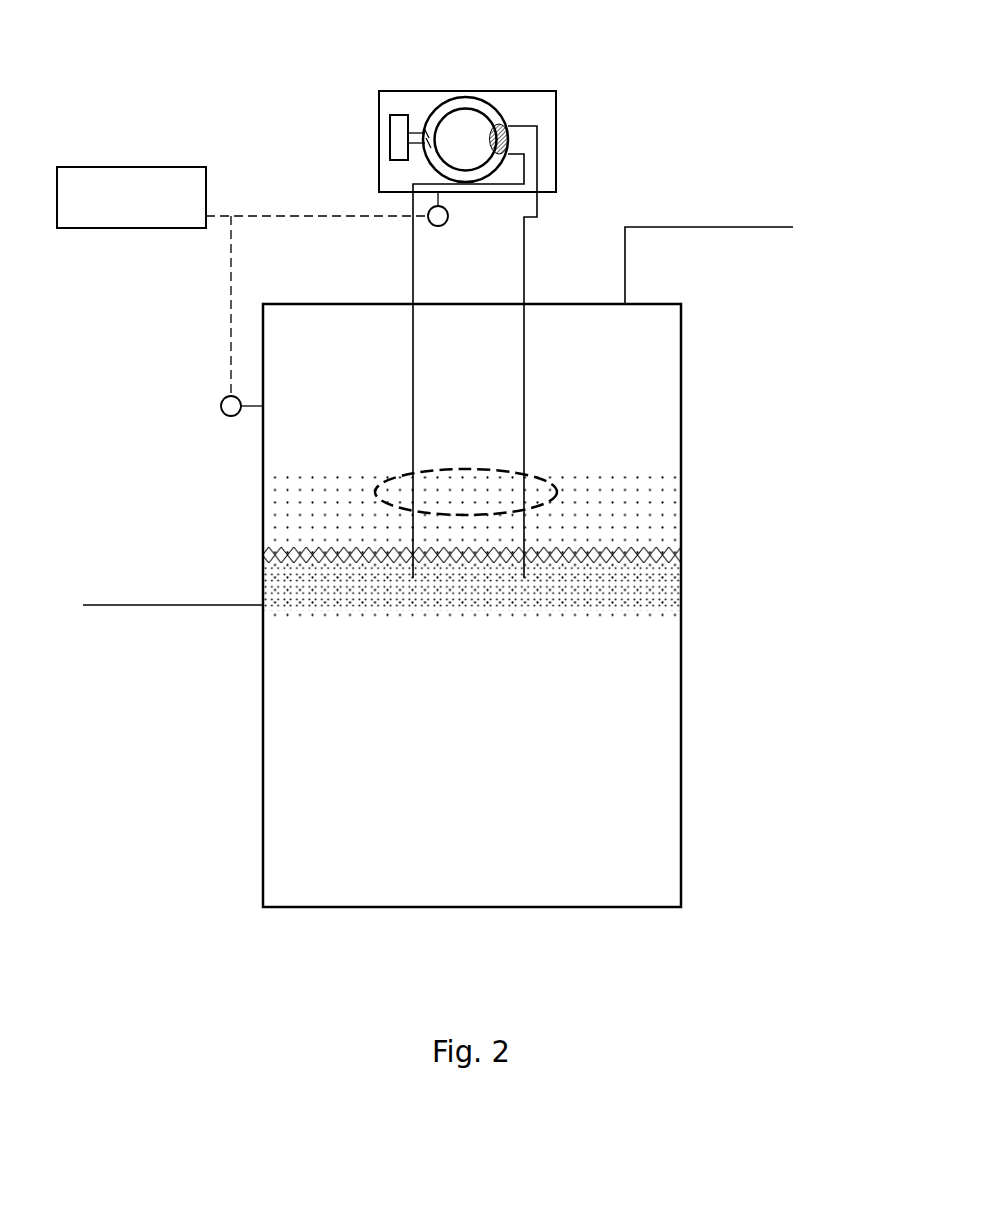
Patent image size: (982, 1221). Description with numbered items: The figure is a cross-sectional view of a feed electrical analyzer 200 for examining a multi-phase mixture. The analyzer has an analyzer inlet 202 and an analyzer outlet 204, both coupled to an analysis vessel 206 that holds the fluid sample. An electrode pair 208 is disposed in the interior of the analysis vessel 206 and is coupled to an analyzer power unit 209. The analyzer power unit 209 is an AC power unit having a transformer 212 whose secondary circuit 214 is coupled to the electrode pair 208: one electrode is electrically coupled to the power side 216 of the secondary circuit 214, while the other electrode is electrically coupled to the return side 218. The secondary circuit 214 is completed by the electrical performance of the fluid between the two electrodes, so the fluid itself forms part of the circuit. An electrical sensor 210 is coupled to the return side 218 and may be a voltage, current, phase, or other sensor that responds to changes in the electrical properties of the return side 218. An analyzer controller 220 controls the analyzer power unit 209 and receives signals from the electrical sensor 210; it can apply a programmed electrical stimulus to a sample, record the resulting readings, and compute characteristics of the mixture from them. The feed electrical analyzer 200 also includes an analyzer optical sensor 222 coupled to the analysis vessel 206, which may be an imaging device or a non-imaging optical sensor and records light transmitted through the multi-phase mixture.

The feed electrical analyzer 200 is at (643, 985).
The analyzer inlet 202 is at (145, 603).
The analyzer outlet 204 is at (683, 227).
The analysis vessel 206 is at (688, 638).
The electrode pair 208 is at (536, 513).
The analyzer power unit 209 is at (379, 91).
The electrical sensor 210 is at (443, 223).
The transformer 212 is at (464, 97).
The secondary circuit 214 is at (507, 113).
The power side 216 is at (538, 130).
The return side 218 is at (422, 184).
The analyzer controller 220 is at (242, 197).
The analyzer optical sensor 222 is at (228, 416).